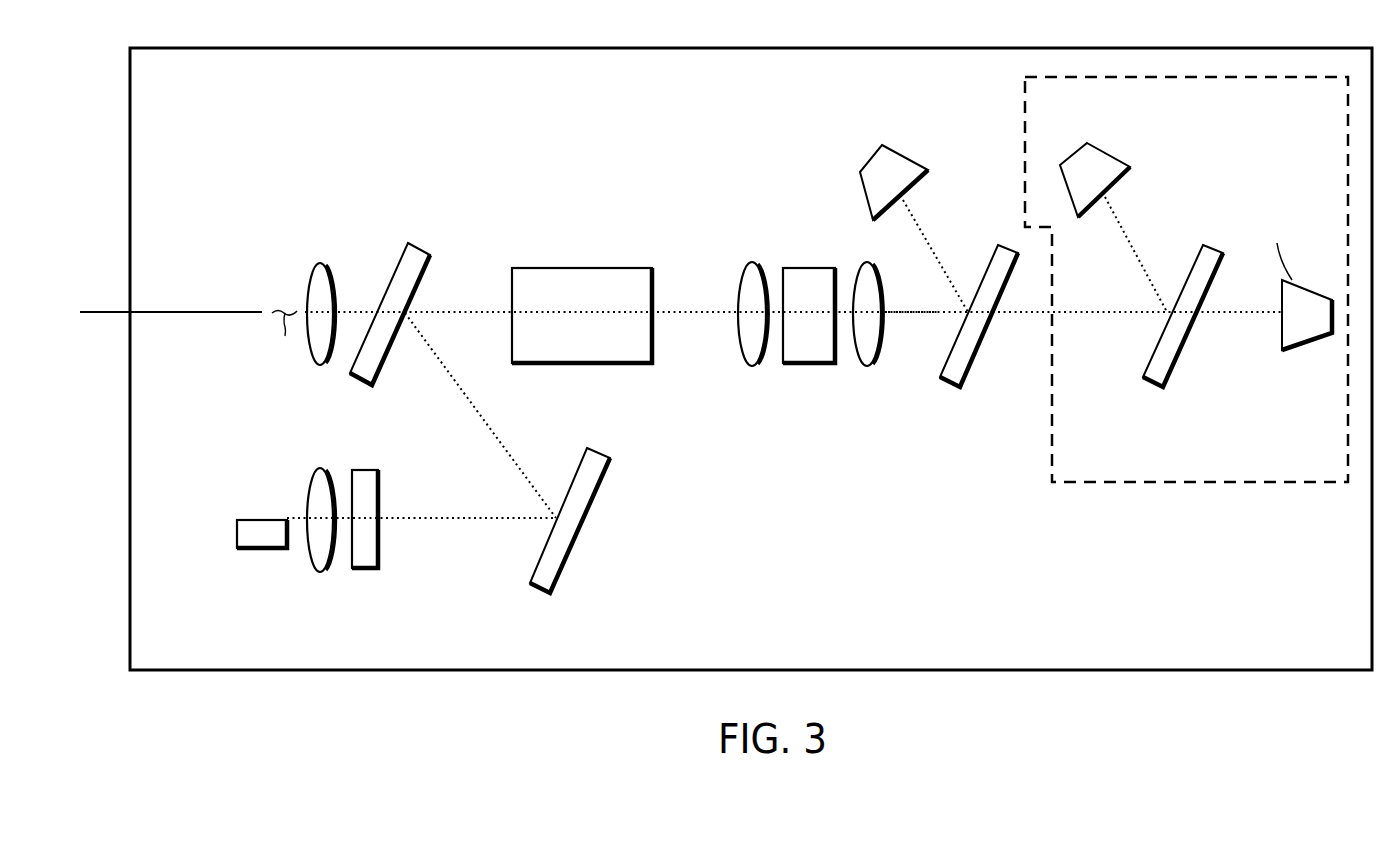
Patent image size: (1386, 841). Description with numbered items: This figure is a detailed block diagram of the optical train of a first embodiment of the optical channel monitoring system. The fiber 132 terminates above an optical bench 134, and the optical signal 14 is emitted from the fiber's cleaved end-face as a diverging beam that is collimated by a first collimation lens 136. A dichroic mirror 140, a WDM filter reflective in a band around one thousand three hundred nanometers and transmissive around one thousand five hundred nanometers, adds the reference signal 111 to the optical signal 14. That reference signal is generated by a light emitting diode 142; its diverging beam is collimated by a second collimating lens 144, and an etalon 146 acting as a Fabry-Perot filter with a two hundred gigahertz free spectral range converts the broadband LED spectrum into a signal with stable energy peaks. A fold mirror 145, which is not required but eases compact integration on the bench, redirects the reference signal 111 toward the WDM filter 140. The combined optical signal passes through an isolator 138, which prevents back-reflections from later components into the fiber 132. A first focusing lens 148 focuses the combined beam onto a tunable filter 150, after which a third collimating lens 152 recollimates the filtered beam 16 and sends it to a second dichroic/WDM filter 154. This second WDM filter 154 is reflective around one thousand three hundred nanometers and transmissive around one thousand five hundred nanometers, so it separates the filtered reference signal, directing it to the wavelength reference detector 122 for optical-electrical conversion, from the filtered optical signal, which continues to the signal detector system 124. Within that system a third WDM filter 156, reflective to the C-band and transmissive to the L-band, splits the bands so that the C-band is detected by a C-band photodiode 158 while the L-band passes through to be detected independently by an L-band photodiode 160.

The optical bench 134 is at (883, 634).
The fiber 132 is at (202, 313).
The optical signal 14 is at (777, 339).
The first collimation lens 136 is at (308, 280).
The dichroic mirror (WDM filter) 140 is at (380, 378).
The reference signal 111 is at (462, 521).
The isolator 138 is at (652, 268).
The first focusing lens 148 is at (738, 308).
The tunable filter 150 is at (810, 262).
The third collimating lens 152 is at (883, 302).
The filtered beam 16 is at (912, 314).
The wavelength reference detector 122 is at (927, 167).
The second dichroic/WDM filter 154 is at (977, 352).
The signal detector system 124 is at (1023, 97).
The C-band photodiode 158 is at (1130, 163).
The third WDM filter 156 is at (1175, 362).
The L-band photodiode 160 is at (1305, 350).
The light emitting diode 142 is at (257, 550).
The second collimating lens 144 is at (320, 574).
The etalon 146 is at (378, 487).
The fold mirror 145 is at (562, 565).